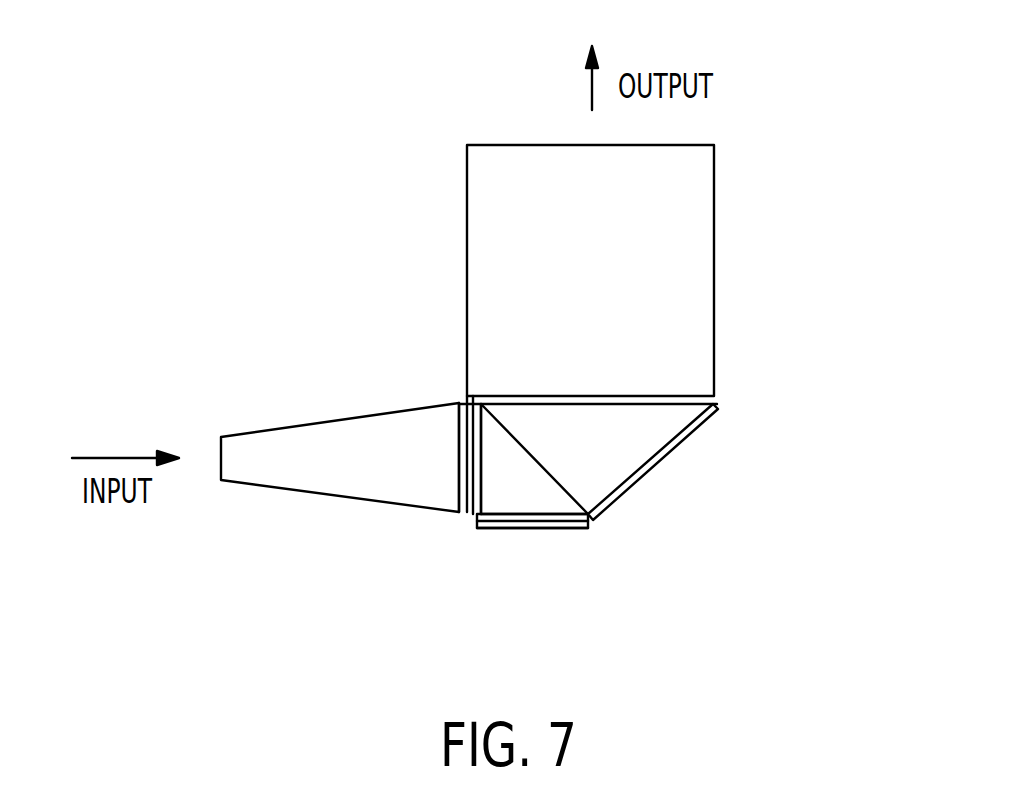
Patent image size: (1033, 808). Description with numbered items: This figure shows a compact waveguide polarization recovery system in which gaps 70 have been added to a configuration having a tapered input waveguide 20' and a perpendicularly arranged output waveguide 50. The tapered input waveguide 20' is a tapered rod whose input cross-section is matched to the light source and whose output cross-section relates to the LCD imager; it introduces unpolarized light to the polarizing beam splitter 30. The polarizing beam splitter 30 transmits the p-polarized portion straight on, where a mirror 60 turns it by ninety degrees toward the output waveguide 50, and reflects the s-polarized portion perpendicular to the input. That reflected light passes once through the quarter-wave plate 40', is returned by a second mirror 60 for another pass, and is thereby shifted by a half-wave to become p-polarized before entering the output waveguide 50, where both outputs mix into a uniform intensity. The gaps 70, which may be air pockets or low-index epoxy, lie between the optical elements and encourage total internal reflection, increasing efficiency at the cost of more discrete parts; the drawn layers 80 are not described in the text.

The tapered input waveguide 20' is at (340, 421).
The polarizing beam splitter 30 is at (550, 473).
The quarter-wave plate 40' is at (520, 568).
The output waveguide 50 is at (714, 295).
The mirror 60 is at (577, 528).
The gap 70 is at (573, 400).
The adhesive layer 80 is at (459, 482).